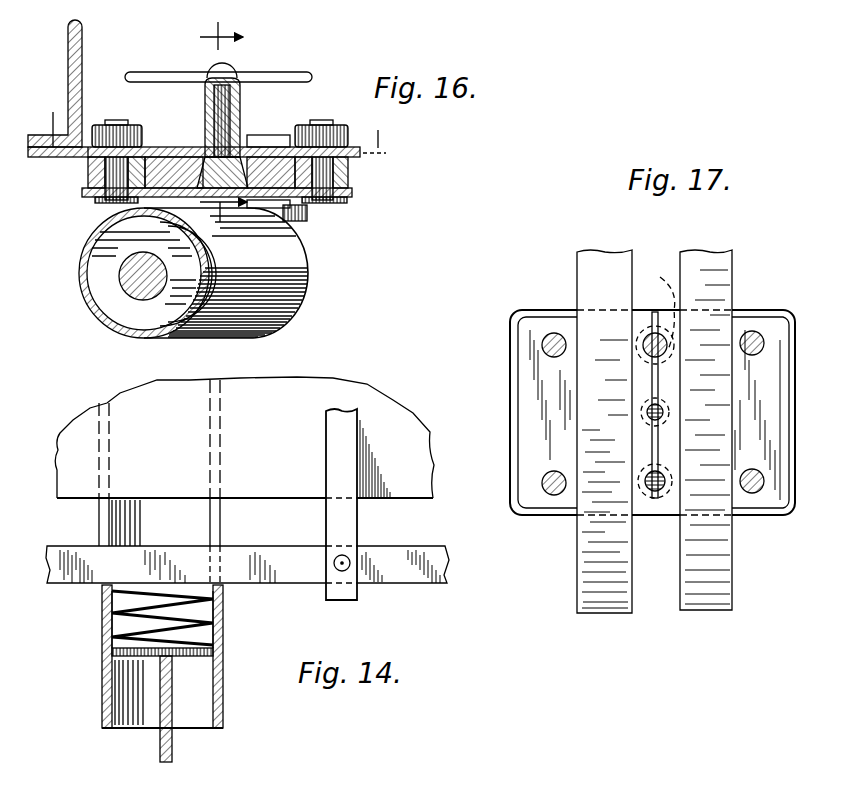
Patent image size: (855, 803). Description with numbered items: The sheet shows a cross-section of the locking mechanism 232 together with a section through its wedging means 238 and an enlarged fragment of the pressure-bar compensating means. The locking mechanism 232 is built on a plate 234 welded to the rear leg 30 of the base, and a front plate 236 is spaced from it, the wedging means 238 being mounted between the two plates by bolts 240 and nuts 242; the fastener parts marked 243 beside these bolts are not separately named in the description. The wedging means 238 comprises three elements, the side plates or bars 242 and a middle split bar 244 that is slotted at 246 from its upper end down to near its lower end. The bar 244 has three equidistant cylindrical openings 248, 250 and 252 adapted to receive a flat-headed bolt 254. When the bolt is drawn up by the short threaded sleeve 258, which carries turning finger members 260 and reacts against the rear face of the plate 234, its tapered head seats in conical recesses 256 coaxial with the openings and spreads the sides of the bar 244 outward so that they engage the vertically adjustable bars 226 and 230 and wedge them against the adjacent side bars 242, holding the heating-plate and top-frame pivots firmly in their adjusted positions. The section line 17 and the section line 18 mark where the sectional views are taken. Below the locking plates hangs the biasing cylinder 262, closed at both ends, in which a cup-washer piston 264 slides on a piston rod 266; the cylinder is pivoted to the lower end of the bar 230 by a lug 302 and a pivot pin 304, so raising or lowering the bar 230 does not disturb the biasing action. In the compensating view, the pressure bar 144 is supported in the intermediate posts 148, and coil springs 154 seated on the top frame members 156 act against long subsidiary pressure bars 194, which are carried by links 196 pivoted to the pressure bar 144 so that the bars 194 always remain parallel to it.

In FIG. 16, the rear leg 30 is at (82, 47).
In FIG. 16, the vertically adjustable bar 226 is at (176, 152).
In FIG. 17, the vertically adjustable bar 226 is at (700, 612).
In FIG. 16, the vertically adjustable bar 230 is at (262, 172).
In FIG. 17, the vertically adjustable bar 230 is at (607, 615).
In FIG. 16, the locking mechanism 232 is at (358, 202).
In FIG. 16, the plate 234 is at (88, 147).
In FIG. 16, the front plate 236 is at (82, 200).
In FIG. 17, the front plate 236 is at (520, 390).
In FIG. 17, the wedging means 238 is at (552, 508).
In FIG. 16, the bolts 240 is at (350, 174).
In FIG. 17, the bolts 240 is at (548, 350).
In FIG. 16, the side plates or bars 242 is at (92, 172).
In FIG. 17, the side plates or bars 242 is at (545, 318).
In FIG. 16, the nut 243 is at (130, 140).
In FIG. 17, the middle split bar 244 is at (655, 508).
In FIG. 17, the slot 246 is at (652, 395).
In FIG. 17, the cylindrical opening 248 is at (646, 340).
In FIG. 17, the cylindrical opening 250 is at (648, 418).
In FIG. 17, the cylindrical opening 252 is at (668, 485).
In FIG. 17, the flat-headed bolt 254 is at (665, 350).
In FIG. 17, the conical recesses 256 is at (655, 304).
In FIG. 16, the threaded sleeve 258 is at (210, 66).
In FIG. 16, the turning finger members 260 is at (303, 73).
In FIG. 16, the cylinder 262 is at (295, 288).
In FIG. 16, the piston 264 is at (152, 322).
In FIG. 16, the piston rod 266 is at (128, 278).
In FIG. 16, the lug 302 is at (308, 220).
In FIG. 16, the pivot pin 304 is at (270, 208).
In FIG. 16, the section line 18 is at (223, 121).
In FIG. 16, the section line 17 is at (217, 124).
In FIG. 14, the pressure bar 144 is at (290, 405).
In FIG. 14, the intermediate posts 148 is at (103, 700).
In FIG. 14, the coil springs 154 is at (222, 617).
In FIG. 14, the top frame members 156 is at (172, 758).
In FIG. 14, the subsidiary pressure bars 194 is at (410, 577).
In FIG. 14, the links 196 is at (347, 529).